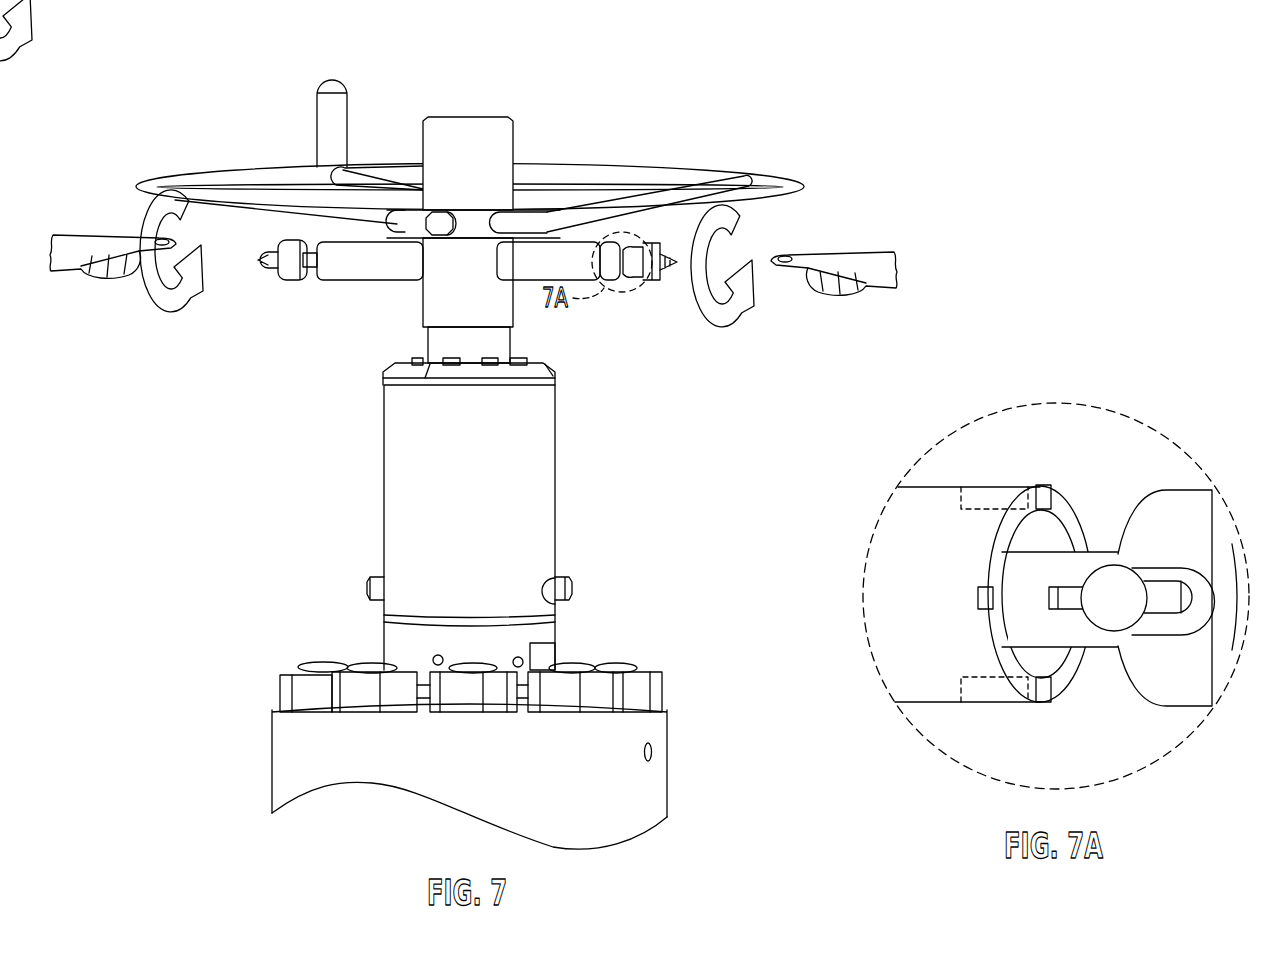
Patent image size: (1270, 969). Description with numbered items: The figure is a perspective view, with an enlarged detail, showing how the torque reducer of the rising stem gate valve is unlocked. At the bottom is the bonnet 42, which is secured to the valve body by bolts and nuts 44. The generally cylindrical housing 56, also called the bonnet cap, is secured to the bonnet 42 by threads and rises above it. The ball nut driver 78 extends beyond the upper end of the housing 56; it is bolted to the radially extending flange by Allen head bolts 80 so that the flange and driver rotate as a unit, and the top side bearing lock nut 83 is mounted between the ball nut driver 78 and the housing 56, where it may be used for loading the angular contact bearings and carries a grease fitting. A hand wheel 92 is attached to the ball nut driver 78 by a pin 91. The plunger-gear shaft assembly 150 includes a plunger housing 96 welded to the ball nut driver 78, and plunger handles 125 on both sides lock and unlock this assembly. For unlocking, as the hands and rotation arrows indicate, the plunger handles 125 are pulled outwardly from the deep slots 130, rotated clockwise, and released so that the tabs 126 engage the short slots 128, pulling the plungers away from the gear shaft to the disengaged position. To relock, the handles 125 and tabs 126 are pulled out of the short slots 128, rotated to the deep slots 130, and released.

In FIG. 7, the bonnet 42 is at (654, 730).
In FIG. 7, the nuts 44 is at (646, 682).
In FIG. 7, the housing 56 is at (556, 465).
In FIG. 7, the ball nut driver 78 is at (517, 308).
In FIG. 7, the Allen head bolts 80 is at (414, 357).
In FIG. 7, the top side bearing lock nut 83 is at (548, 368).
In FIG. 7, the pin 91 is at (438, 222).
In FIG. 7, the hand wheel 92 is at (640, 166).
In FIG. 7, the plunger housing 96 is at (347, 282).
In FIG. 7, the plunger handles 125 is at (262, 258).
In FIG. 7A, the plunger handles 125 is at (1118, 609).
In FIG. 7A, the tabs 126 is at (1062, 598).
In FIG. 7A, the short slots 128 is at (976, 598).
In FIG. 7A, the deep slots 130 is at (993, 498).
In FIG. 7, the plunger-gear shaft assembly 150 is at (264, 357).